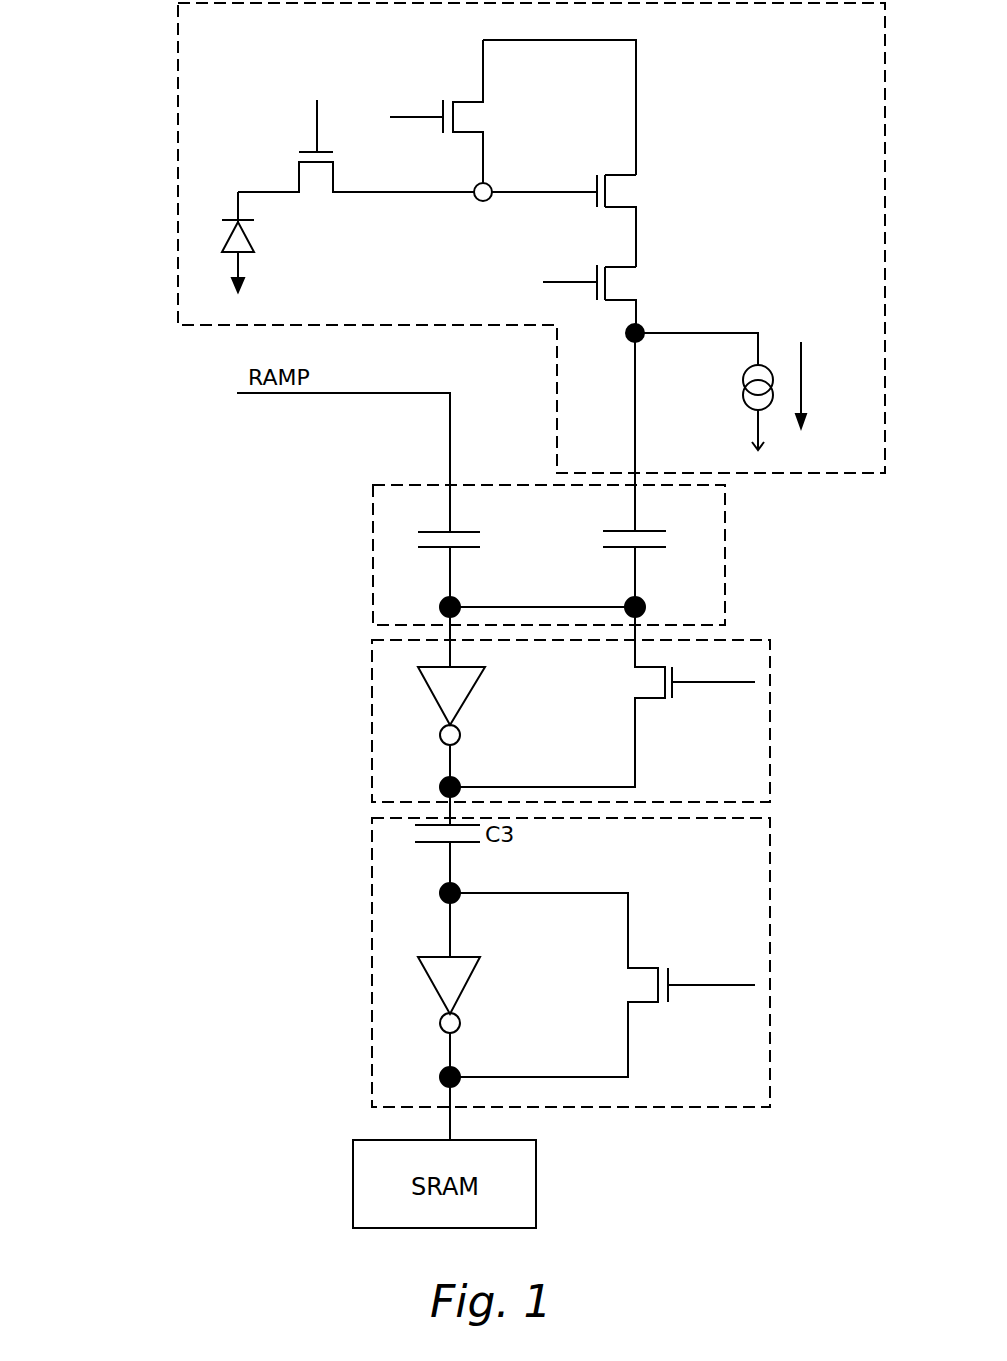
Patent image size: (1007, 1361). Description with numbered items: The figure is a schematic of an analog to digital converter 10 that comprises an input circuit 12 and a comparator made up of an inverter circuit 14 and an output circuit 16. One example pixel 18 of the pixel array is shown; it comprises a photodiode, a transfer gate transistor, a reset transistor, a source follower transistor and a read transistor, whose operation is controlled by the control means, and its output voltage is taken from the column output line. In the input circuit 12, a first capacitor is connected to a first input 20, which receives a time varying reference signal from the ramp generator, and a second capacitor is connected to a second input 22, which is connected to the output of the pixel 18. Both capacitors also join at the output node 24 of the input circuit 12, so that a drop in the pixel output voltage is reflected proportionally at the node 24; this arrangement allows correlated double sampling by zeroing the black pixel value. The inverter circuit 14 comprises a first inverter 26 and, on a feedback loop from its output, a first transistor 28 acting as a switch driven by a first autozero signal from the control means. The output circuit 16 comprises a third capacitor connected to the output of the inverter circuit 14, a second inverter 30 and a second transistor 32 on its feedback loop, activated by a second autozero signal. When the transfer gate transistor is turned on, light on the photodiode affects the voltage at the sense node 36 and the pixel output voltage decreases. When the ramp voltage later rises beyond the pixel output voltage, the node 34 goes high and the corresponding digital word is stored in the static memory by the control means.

The analog to digital converter 10 is at (270, 640).
The input circuit 12 is at (373, 543).
The inverter circuit 14 is at (372, 725).
The output circuit 16 is at (372, 980).
The pixel 18 is at (265, 81).
The first input 20 is at (448, 484).
The second input 22 is at (633, 487).
The output node 24 is at (446, 600).
The first inverter 26 is at (467, 697).
The first transistor 28 is at (643, 697).
The second inverter 30 is at (467, 983).
The second transistor 32 is at (645, 1002).
The node 34 is at (445, 1073).
The sense node 36 is at (475, 198).